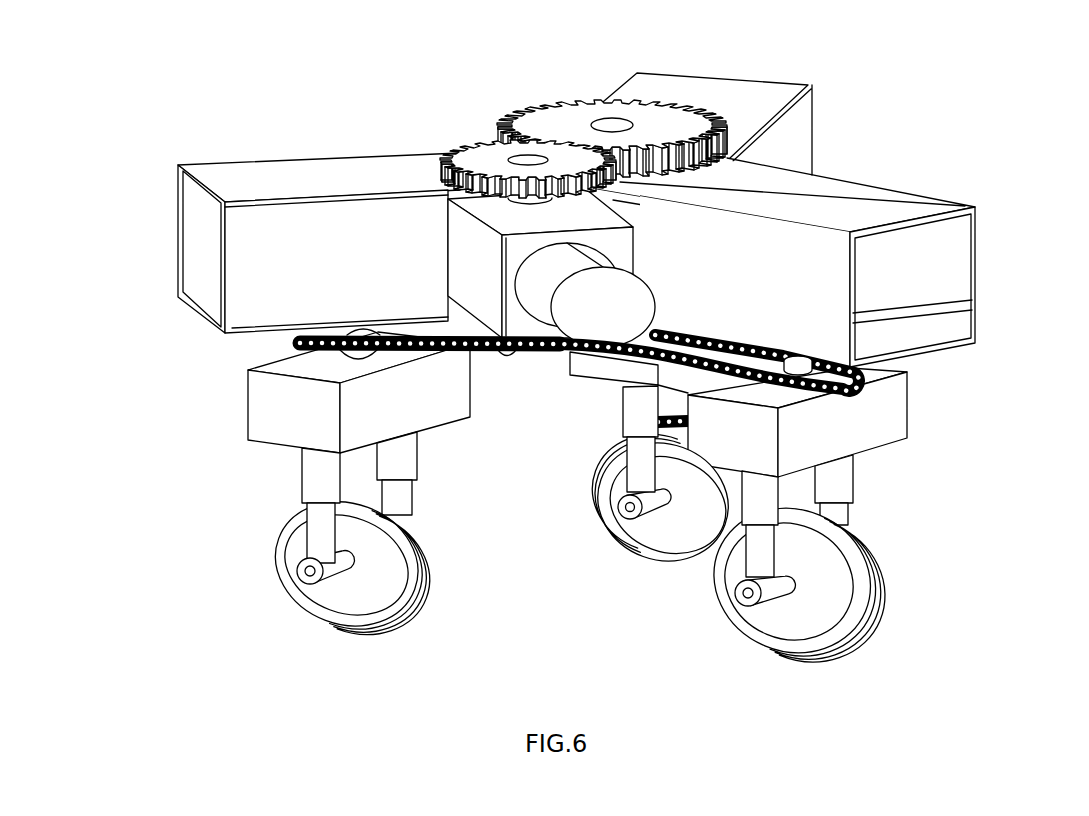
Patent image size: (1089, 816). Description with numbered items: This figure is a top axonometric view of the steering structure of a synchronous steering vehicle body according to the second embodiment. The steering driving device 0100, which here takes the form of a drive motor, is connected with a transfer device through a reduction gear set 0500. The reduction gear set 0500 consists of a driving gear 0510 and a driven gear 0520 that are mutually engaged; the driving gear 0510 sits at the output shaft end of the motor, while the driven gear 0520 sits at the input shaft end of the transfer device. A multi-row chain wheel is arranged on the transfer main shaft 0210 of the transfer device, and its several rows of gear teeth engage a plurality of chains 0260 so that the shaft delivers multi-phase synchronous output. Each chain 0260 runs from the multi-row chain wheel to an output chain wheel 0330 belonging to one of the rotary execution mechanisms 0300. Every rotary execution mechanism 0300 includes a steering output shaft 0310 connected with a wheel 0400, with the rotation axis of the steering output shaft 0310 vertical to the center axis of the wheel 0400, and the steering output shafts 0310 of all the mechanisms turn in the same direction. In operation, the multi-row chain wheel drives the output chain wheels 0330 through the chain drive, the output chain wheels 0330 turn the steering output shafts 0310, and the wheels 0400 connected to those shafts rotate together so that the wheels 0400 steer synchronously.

The steering driving device 0100 is at (608, 307).
The transfer main shaft 0210 is at (592, 120).
The chain 0260 is at (503, 347).
The rotary execution mechanism 0300 is at (388, 333).
The steering output shaft 0310 is at (787, 370).
The output chain wheel 0330 is at (845, 390).
The wheel 0400 is at (816, 578).
The reduction gear set 0500 is at (690, 123).
The driving gear 0510 is at (452, 153).
The driven gear 0520 is at (560, 116).